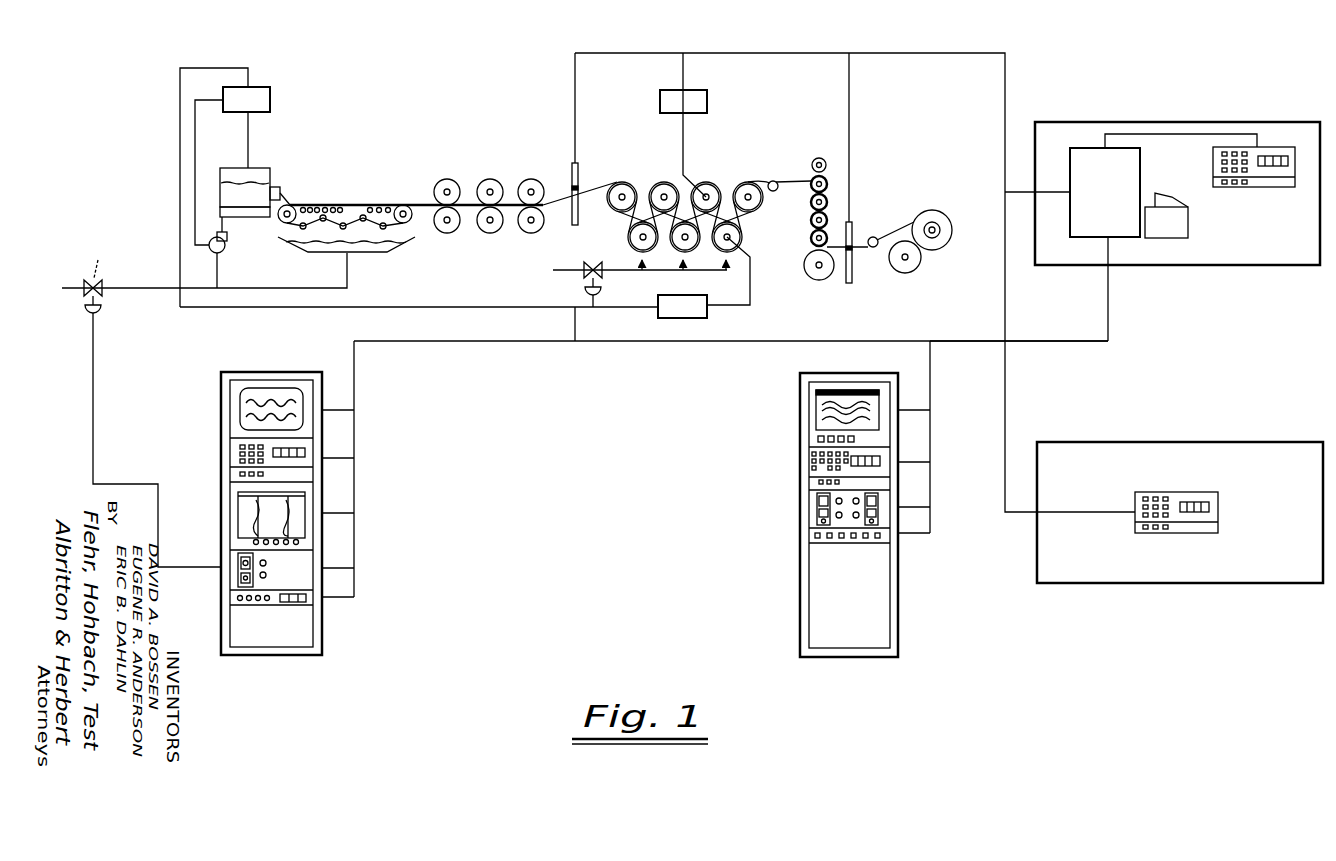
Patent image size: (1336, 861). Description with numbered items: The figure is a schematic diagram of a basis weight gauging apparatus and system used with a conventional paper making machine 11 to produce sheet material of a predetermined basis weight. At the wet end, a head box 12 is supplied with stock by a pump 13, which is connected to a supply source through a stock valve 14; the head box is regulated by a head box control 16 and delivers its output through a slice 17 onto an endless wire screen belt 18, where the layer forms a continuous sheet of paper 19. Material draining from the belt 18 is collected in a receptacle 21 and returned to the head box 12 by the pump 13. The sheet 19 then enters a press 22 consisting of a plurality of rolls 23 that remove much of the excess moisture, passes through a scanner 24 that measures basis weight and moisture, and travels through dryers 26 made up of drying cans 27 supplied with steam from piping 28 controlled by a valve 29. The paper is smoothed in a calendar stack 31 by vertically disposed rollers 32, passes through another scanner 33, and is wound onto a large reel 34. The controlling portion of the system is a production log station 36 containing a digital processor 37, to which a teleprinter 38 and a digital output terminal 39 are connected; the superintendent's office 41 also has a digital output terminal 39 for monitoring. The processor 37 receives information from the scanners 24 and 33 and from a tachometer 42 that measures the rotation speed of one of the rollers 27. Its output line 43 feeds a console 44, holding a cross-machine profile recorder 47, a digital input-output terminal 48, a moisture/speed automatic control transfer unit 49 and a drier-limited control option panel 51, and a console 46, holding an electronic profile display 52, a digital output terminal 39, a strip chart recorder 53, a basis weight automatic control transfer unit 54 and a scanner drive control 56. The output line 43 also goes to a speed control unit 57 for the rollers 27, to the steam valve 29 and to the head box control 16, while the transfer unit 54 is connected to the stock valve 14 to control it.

The paper making machine 11 is at (455, 95).
The head box 12 is at (268, 173).
The pump 13 is at (226, 247).
The stock valve 14 is at (104, 291).
The head box control 16 is at (260, 96).
The slice 17 is at (284, 194).
The endless wire screen belt 18 is at (350, 204).
The sheet of paper 19 is at (402, 204).
The receptacle 21 is at (395, 253).
The press section 22 is at (489, 166).
The rolls 23 is at (491, 185).
The scanner 24 is at (563, 185).
The dryers 26 is at (690, 191).
The drying cans 27 is at (634, 238).
The piping 28 is at (680, 274).
The valve 29 is at (604, 273).
The calendar stack 31 is at (808, 198).
The vertically disposed rollers 32 is at (819, 157).
The scanner 33 is at (858, 226).
The reel 34 is at (949, 240).
The production log station 36 is at (1293, 117).
The digital processor 37 is at (1072, 156).
The teleprinter 38 is at (1172, 238).
The digital output terminal 39 is at (1213, 158).
The superintendent's office 41 is at (1298, 438).
The tachometer 42 is at (699, 92).
The output line 43 is at (978, 323).
The console 44 is at (866, 500).
The console 46 is at (376, 491).
The cross-machine profile recorder 47 is at (878, 418).
The digital input-output terminal 48 is at (885, 470).
The moisture/speed automatic control transfer unit 49 is at (884, 517).
The drier-limited control option panel 51 is at (888, 537).
The electronic profile display 52 is at (316, 404).
The strip chart recorder 53 is at (316, 510).
The basis weight automatic control transfer unit 54 is at (316, 567).
The scanner drive control 56 is at (317, 600).
The speed control unit 57 is at (704, 303).